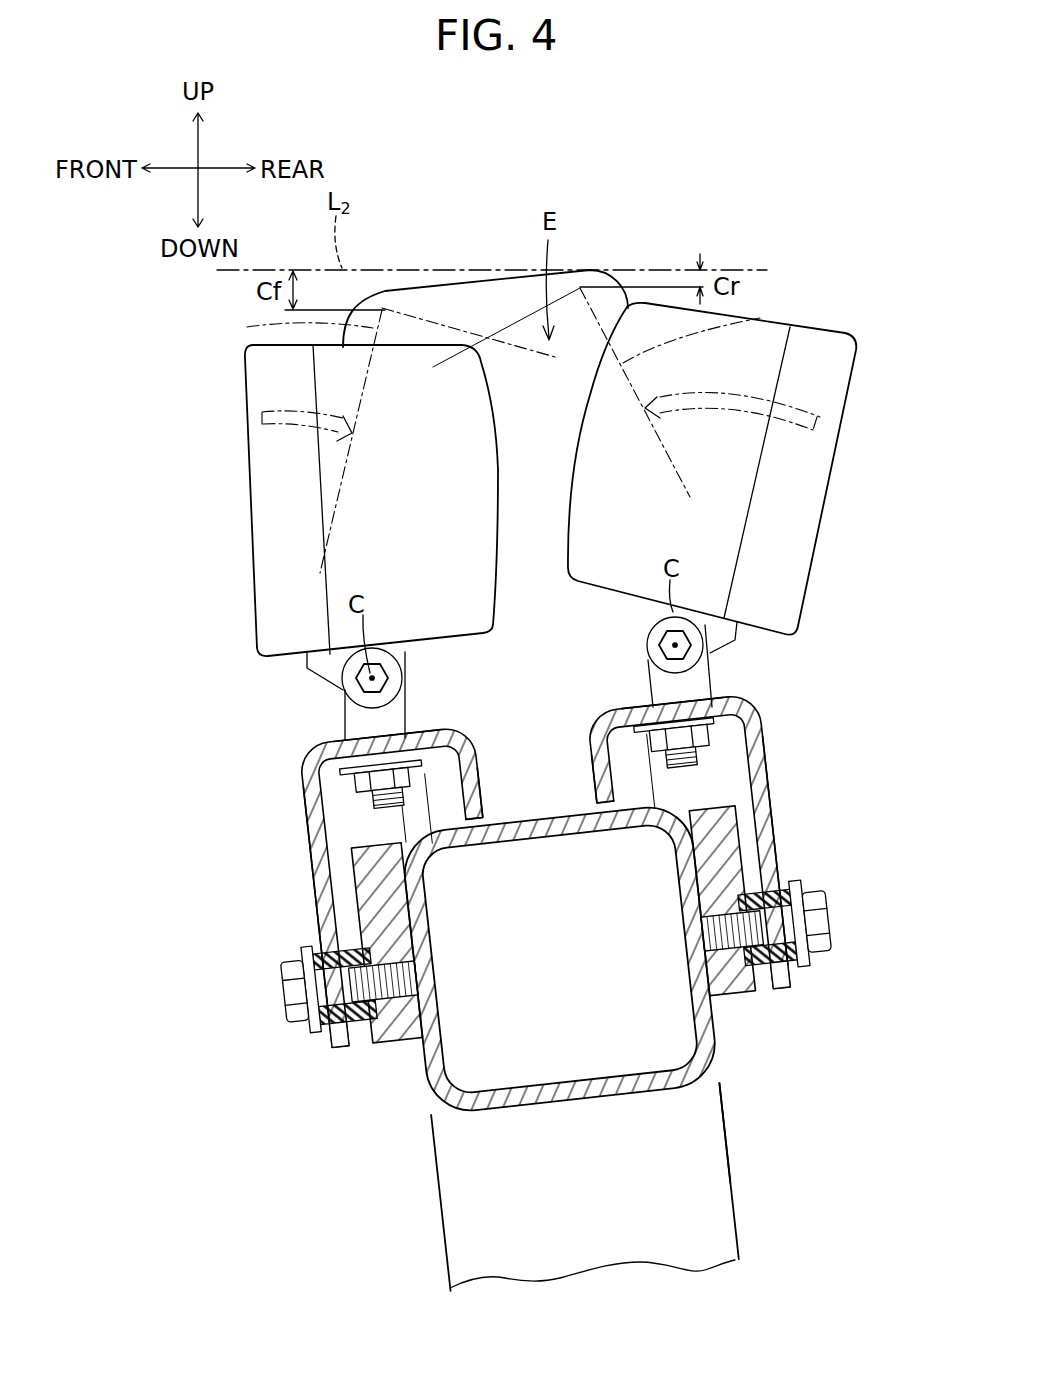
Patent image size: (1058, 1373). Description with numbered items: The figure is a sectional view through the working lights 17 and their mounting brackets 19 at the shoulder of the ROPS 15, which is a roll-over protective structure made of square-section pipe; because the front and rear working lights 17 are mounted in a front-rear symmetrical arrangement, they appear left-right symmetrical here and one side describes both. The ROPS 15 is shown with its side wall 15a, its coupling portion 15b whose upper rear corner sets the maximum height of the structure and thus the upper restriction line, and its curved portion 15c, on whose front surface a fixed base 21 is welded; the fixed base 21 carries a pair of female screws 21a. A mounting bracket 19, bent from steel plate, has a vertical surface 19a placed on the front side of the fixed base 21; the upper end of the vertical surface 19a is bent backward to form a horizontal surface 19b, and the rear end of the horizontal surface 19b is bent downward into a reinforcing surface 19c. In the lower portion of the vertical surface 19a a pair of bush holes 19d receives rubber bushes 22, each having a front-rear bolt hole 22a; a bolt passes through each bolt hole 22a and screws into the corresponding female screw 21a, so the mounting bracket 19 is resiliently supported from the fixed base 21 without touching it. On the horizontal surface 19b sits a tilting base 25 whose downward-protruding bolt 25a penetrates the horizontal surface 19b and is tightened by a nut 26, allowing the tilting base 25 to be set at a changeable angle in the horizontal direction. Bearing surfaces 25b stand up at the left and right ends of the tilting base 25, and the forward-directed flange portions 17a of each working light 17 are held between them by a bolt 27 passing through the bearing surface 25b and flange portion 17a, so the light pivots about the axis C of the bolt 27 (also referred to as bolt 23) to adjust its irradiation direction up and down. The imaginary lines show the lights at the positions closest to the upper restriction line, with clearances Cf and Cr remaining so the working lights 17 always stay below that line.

The ROPS 15 is at (745, 1189).
The pillar side wall 15a is at (710, 1127).
The coupling portion 15b is at (597, 280).
The curved portion 15c is at (343, 722).
The working light 17 is at (275, 360).
The flange portion 17a is at (307, 665).
The mounting bracket 19 is at (307, 797).
The vertical surface 19a is at (310, 837).
The horizontal surface 19b is at (430, 732).
The reinforcing surface 19c is at (482, 803).
The bush hole 19d is at (328, 1032).
The fixed base 21 is at (400, 913).
The female screw 21a is at (410, 967).
The rubber bush 22 is at (366, 1022).
The bolt hole 22a is at (292, 994).
The bolt 23 is at (282, 967).
The tilting base 25 is at (344, 707).
The bolt 25a is at (392, 843).
The bearing surface 25b is at (400, 697).
The nut 26 is at (360, 780).
The bolt 27 is at (377, 670).